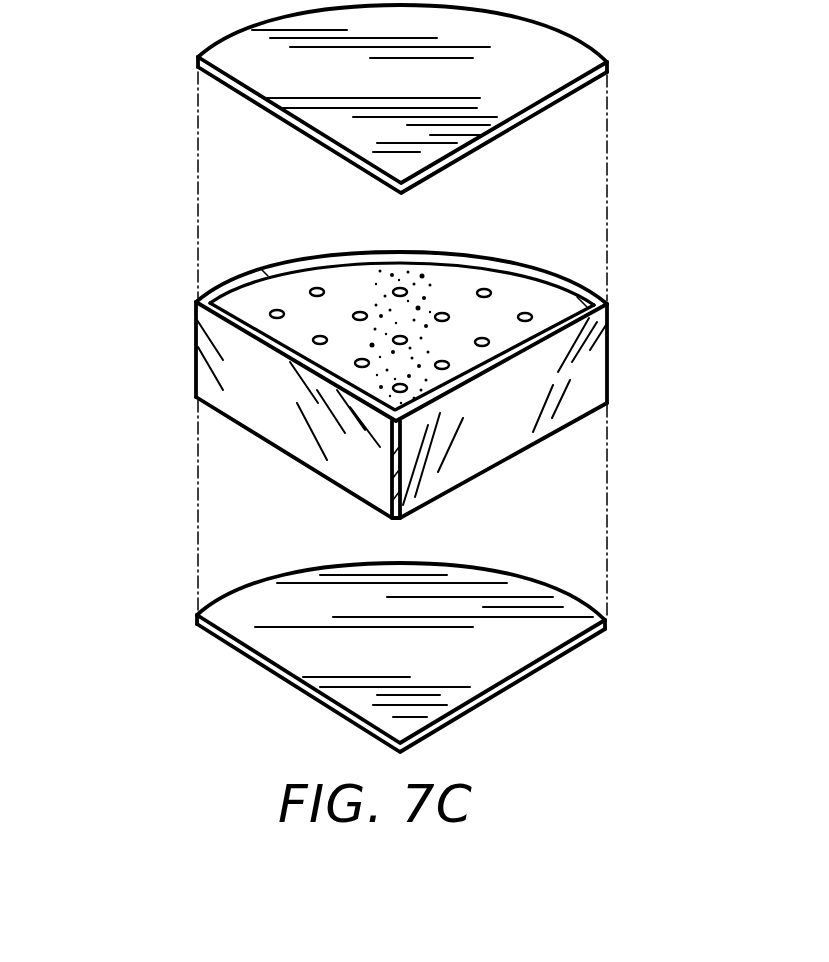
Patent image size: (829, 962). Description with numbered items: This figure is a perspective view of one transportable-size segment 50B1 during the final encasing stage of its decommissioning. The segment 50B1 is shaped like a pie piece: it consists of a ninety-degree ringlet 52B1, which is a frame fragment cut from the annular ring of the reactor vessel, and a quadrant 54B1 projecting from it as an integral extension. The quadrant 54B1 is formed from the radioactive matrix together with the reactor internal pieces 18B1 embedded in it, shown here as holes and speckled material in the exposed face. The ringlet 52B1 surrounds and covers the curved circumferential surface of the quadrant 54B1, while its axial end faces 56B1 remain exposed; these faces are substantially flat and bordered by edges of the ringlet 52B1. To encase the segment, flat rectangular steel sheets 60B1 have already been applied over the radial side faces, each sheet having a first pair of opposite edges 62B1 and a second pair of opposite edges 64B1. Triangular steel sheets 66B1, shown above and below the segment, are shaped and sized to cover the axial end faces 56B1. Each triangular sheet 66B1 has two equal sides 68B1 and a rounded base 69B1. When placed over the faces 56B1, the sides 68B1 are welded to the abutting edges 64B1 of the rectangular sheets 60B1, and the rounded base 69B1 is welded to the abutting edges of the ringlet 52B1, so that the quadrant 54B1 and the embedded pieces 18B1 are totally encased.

The segment 50B1 is at (397, 385).
The ringlet 52B1 is at (575, 281).
The quadrant 54B1 is at (364, 289).
The axial end faces 56B1 is at (314, 319).
The reactor internal pieces 18B1 is at (444, 312).
The rectangular steel sheets 60B1 is at (260, 378).
The first pair of opposite edges 62B1 is at (193, 352).
The second pair of opposite edges 64B1 is at (295, 458).
The steel sheets 66B1 is at (520, 54).
The equal sides 68B1 is at (280, 118).
The rounded base 69B1 is at (262, 27).